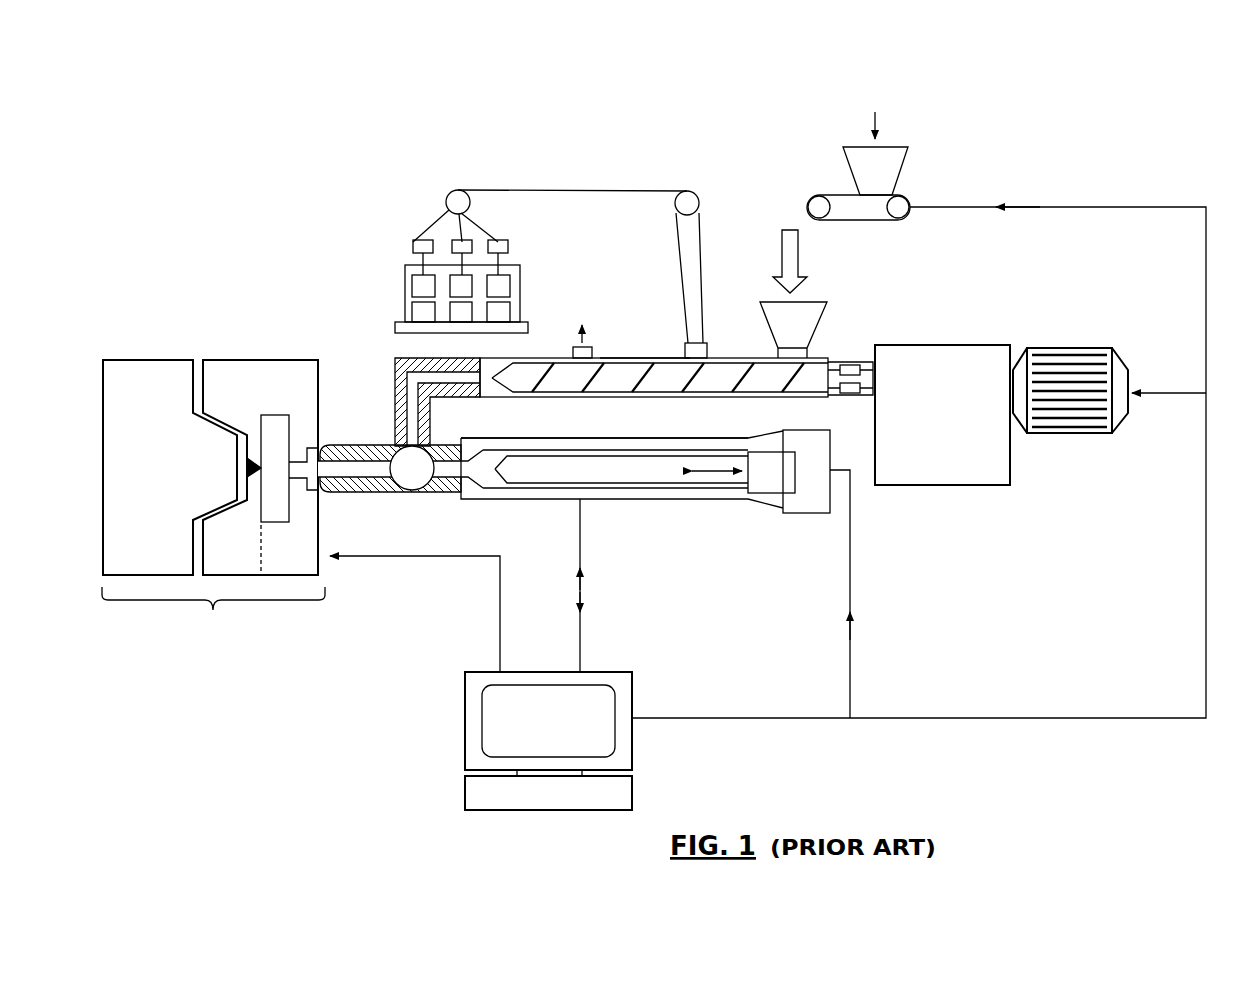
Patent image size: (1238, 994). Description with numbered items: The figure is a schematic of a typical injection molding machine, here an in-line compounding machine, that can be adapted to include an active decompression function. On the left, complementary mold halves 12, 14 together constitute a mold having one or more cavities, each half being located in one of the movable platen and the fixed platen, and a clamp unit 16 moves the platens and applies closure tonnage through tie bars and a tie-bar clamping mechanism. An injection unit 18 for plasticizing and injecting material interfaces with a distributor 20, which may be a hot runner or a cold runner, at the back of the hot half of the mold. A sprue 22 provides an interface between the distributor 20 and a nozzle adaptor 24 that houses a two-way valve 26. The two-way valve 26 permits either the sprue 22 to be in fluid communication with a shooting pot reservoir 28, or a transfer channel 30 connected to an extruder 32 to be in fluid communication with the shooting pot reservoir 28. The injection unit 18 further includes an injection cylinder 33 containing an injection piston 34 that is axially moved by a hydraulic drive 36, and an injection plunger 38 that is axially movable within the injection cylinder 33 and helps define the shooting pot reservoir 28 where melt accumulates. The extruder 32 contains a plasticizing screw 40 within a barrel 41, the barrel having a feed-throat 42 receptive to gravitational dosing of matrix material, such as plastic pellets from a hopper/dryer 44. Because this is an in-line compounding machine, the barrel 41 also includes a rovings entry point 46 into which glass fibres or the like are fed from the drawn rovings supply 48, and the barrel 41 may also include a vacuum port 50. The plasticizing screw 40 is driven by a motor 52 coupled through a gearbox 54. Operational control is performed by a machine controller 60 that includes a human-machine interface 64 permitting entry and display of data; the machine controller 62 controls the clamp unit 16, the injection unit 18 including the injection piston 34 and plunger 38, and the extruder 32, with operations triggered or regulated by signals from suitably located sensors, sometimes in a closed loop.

The mold half 12 is at (140, 358).
The mold half 14 is at (222, 358).
The clamp unit 16 is at (213, 626).
The injection unit 18 is at (749, 437).
The distributor 20 is at (281, 413).
The sprue 22 is at (315, 446).
The nozzle adaptor 24 is at (357, 493).
The two-way valve 26 is at (415, 483).
The shooting pot reservoir 28 is at (495, 481).
The transfer channel 30 is at (412, 385).
The extruder 32 is at (650, 398).
The injection cylinder 33 is at (572, 436).
The injection piston 34 is at (675, 481).
The hydraulic drive 36 is at (818, 514).
The injection plunger 38 is at (622, 479).
The plasticizing screw 40 is at (748, 357).
The barrel 41 is at (650, 356).
The feed-throat 42 is at (808, 318).
The hopper/dryer 44 is at (890, 168).
The rovings entry point 46 is at (707, 352).
The roving feeder 48 is at (533, 190).
The vacuum port 50 is at (573, 351).
The motor 52 is at (1060, 348).
The gearbox 54 is at (942, 415).
The machine controller 60 is at (632, 738).
The machine controller 62 is at (465, 784).
The human-machine interface 64 is at (490, 709).